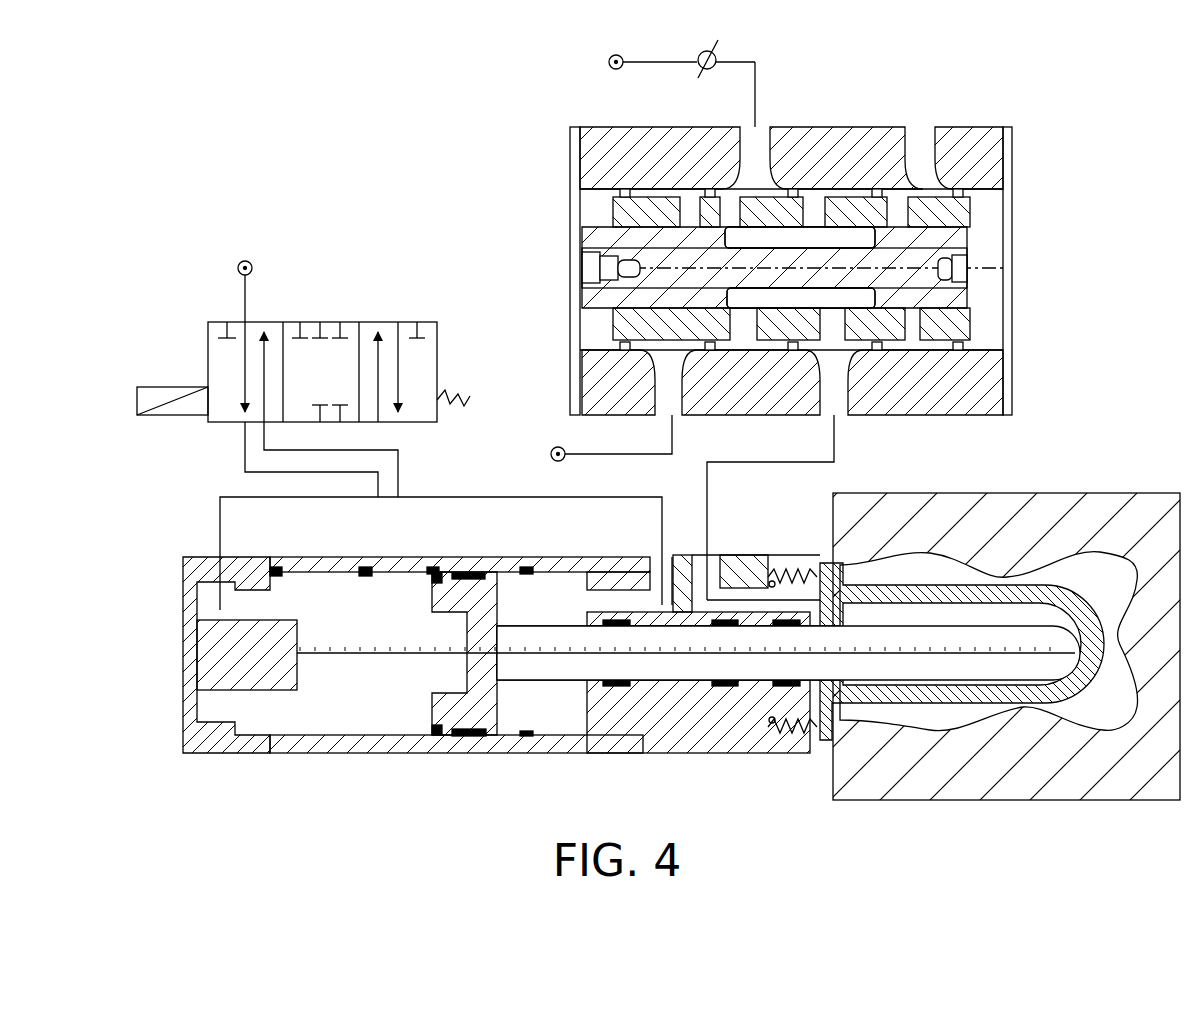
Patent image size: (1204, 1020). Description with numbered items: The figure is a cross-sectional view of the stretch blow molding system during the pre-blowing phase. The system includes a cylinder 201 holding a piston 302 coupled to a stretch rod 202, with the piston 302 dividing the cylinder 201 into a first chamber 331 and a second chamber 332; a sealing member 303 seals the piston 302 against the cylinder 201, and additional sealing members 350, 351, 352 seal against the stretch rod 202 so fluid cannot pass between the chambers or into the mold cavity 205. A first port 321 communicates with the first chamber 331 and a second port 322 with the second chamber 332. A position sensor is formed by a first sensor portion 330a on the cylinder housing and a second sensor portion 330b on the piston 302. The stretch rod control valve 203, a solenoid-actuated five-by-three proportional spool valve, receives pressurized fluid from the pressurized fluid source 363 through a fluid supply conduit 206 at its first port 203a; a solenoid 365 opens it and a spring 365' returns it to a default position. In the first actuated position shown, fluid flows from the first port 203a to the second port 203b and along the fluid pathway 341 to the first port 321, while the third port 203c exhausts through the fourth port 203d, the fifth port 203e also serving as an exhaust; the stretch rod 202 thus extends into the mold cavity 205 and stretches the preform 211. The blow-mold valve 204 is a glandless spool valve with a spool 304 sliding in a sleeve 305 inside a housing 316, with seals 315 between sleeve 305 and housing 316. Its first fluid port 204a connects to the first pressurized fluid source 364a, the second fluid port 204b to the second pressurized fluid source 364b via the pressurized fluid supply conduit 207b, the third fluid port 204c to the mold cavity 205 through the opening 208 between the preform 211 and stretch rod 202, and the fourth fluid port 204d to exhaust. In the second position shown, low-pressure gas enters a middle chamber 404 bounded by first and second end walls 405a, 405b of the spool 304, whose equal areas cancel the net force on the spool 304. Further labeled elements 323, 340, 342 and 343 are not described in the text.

The cylinder 201 is at (455, 767).
The stretch rod 202 is at (688, 710).
The stretch rod control valve 203 is at (350, 366).
The first port 203a is at (338, 296).
The second port 203b is at (289, 409).
The third port 203c is at (362, 427).
The fourth port 203d is at (378, 354).
The fifth port 203e is at (279, 303).
The blow-mold valve 204 is at (831, 264).
The first fluid port 204a is at (839, 125).
The second fluid port 204b is at (701, 398).
The third fluid port 204c is at (855, 475).
The fourth fluid port 204d is at (952, 125).
The mold cavity 205 is at (1006, 622).
The fluid supply conduit 206 is at (271, 381).
The pressurized fluid supply conduit 207b is at (618, 454).
The opening 208 is at (793, 618).
The preform 211 is at (800, 698).
The piston 302 is at (476, 683).
The sealing member 303 is at (495, 785).
The spool 304 is at (820, 266).
The sleeve 305 is at (835, 268).
The seals 315 is at (781, 209).
The housing 316 is at (606, 158).
The first port 321 is at (221, 629).
The second port 322 is at (680, 559).
The gland 323 is at (756, 553).
The first sensor portion 330a is at (401, 543).
The second sensor portion 330b is at (399, 759).
The first chamber 331 is at (445, 766).
The second chamber 332 is at (460, 698).
The piston 340 is at (213, 655).
The fluid pathway 341 is at (280, 536).
The seal 342 is at (535, 535).
The supply line 343 is at (763, 539).
The sealing member 350 is at (698, 711).
The sealing member 351 is at (713, 711).
The sealing member 352 is at (769, 711).
The pressurized fluid source 363 is at (269, 249).
The first pressurized fluid source 364a is at (645, 66).
The second pressurized fluid source 364b is at (540, 434).
The solenoid 365 is at (165, 373).
The spring 365' is at (478, 379).
The middle chamber 404 is at (774, 355).
The first end wall 405a is at (800, 241).
The second end wall 405b is at (845, 380).